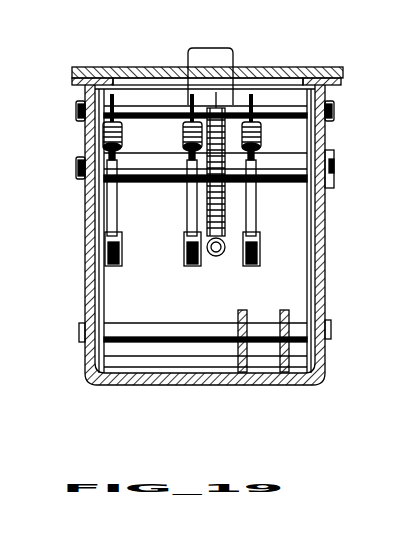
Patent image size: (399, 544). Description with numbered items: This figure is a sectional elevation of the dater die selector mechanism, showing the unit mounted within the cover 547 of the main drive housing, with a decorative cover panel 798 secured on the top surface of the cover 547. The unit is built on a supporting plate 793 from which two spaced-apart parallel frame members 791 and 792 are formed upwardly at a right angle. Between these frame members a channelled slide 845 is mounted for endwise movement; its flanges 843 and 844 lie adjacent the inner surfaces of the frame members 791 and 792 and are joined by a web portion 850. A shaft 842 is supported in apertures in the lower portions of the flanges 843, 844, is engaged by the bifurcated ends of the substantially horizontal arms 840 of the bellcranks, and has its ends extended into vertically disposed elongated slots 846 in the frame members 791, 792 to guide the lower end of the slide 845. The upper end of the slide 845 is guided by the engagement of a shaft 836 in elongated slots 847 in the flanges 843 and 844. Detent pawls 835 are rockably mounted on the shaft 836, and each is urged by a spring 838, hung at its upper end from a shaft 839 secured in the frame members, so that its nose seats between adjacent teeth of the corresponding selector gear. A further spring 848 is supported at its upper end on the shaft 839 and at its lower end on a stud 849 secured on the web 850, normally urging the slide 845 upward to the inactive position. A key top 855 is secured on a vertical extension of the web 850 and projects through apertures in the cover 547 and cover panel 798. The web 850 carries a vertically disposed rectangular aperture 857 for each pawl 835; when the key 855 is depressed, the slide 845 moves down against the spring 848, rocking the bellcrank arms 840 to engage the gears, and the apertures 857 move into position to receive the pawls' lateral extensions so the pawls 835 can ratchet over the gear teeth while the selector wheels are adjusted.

The cover panel 798 is at (85, 67).
The button, or key top 855 is at (210, 50).
The cover 547 is at (338, 80).
The shaft 839 is at (131, 113).
The spring 838 is at (183, 131).
The elongated slot 847 is at (84, 141).
The shaft 836 is at (335, 163).
The spring 848 is at (207, 201).
The detent pawl 835 is at (190, 214).
The rectangular aperture 857 is at (184, 250).
The frame member 792 is at (322, 262).
The frame member 791 is at (92, 256).
The flange 843 is at (97, 291).
The web portion 850 is at (172, 283).
The stud 849 is at (226, 256).
The flange 844 is at (309, 285).
The elongated slot 846 is at (80, 313).
The shaft 842 is at (155, 332).
The arm 840 is at (284, 310).
The slide 845 is at (171, 367).
The supporting plate 793 is at (217, 381).